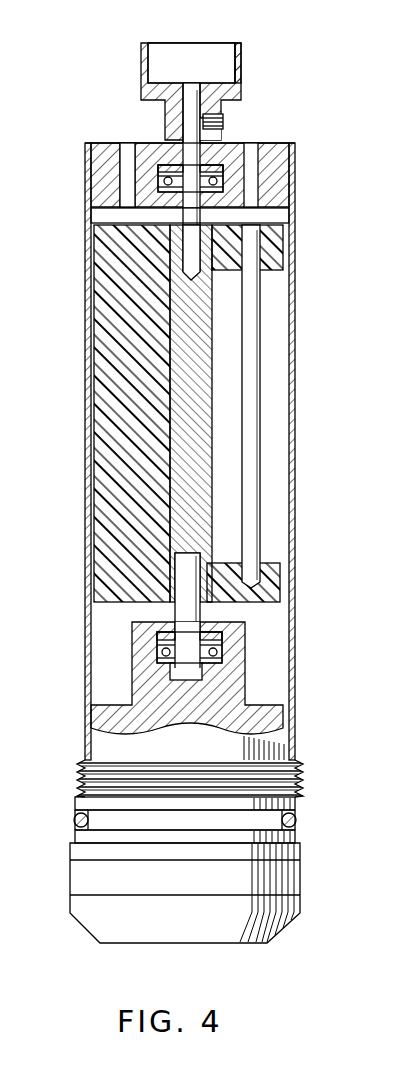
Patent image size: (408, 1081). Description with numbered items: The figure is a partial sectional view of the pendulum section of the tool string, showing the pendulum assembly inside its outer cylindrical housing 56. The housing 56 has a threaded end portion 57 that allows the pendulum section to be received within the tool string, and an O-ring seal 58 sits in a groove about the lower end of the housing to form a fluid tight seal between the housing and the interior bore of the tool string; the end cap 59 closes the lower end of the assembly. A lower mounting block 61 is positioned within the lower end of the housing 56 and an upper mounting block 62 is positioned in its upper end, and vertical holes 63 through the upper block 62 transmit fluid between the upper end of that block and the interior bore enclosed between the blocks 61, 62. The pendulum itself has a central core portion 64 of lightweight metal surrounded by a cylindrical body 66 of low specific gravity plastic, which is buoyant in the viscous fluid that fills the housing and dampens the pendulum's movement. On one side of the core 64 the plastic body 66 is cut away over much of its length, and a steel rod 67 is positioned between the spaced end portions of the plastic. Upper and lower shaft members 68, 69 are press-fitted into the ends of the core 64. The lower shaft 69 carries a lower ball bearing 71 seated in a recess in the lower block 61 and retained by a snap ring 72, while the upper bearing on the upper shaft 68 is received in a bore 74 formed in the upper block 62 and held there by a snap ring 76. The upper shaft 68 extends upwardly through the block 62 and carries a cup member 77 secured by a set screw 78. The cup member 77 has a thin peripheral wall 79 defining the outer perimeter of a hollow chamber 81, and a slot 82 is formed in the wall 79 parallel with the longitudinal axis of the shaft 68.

The outer cylindrical housing 56 is at (292, 403).
The threaded end portion 57 is at (298, 782).
The O-ring seal 58 is at (296, 827).
The end cap 59 is at (299, 905).
The lower mounting block 61 is at (98, 716).
The upper mounting block 62 is at (97, 150).
The vertical holes 63 is at (128, 148).
The central core portion 64 is at (197, 362).
The cylindrical body 66 is at (100, 556).
The steel rod 67 is at (250, 302).
The upper shaft member 68 is at (190, 220).
The lower shaft member 69 is at (185, 618).
The lower ball bearing 71 is at (222, 658).
The snap ring 72 is at (155, 636).
The bore 74 is at (213, 160).
The snap ring 76 is at (163, 170).
The cup member 77 is at (178, 81).
The set screw 78 is at (224, 120).
The thin peripheral wall 79 is at (143, 58).
The hollow chamber 81 is at (180, 76).
The slot 82 is at (240, 55).